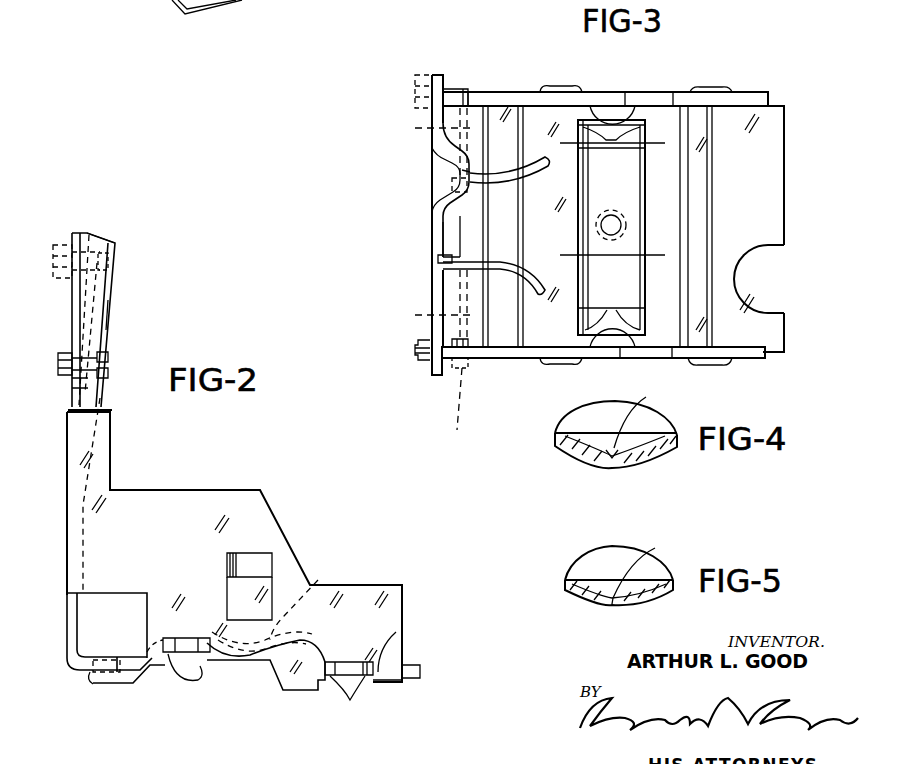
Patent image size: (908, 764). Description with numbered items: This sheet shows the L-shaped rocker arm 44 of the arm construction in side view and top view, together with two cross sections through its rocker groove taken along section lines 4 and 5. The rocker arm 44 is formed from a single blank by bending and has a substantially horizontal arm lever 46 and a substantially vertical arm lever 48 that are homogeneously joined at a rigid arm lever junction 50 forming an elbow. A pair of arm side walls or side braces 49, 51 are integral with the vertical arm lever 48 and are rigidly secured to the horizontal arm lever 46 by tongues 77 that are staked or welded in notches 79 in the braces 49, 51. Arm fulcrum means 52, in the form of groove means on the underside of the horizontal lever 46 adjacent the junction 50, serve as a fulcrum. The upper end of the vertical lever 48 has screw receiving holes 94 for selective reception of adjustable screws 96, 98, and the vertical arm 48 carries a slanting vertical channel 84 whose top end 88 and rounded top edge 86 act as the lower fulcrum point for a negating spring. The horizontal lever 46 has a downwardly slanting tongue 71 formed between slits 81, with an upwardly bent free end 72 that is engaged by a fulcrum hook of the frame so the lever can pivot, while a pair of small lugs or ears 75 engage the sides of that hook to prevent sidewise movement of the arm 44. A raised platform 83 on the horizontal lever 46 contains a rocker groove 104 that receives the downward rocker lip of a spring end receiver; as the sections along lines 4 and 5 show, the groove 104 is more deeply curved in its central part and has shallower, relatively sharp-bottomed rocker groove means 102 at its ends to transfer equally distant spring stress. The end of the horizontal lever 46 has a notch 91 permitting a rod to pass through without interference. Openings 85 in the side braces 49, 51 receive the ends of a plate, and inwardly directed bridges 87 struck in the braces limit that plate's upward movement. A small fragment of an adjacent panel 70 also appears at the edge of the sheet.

In FIG. 3, the L-shaped rocker arm 44 is at (786, 50).
In FIG. 2, the L-shaped rocker arm 44 is at (305, 462).
In FIG. 3, the horizontal arm lever 46 is at (497, 406).
In FIG. 2, the horizontal arm lever 46 is at (200, 702).
In FIG. 3, the vertical arm lever 48 is at (388, 253).
In FIG. 2, the vertical arm lever 48 is at (148, 300).
In FIG. 3, the arm side wall 49 is at (512, 360).
In FIG. 2, the arm side wall 49 is at (168, 500).
In FIG. 2, the arm lever junction 50 is at (68, 672).
In FIG. 3, the arm side wall 51 is at (597, 91).
In FIG. 3, the arm fulcrum means 52 is at (429, 219).
In FIG. 2, the arm fulcrum means 52 is at (97, 684).
In FIG. 2, the panel 70 is at (234, 10).
In FIG. 3, the downwardly slanting tongue 71 is at (510, 230).
In FIG. 2, the downwardly slanting tongue 71 is at (142, 681).
In FIG. 3, the upwardly bent free end 72 is at (441, 228).
In FIG. 2, the upwardly bent free end 72 is at (90, 676).
In FIG. 3, the lugs or ears 75 is at (448, 170).
In FIG. 2, the lugs or ears 75 is at (84, 656).
In FIG. 3, the tongues 77 is at (552, 87).
In FIG. 2, the tongues 77 is at (185, 638).
In FIG. 2, the notches 79 is at (398, 640).
In FIG. 3, the slits 81 is at (530, 140).
In FIG. 3, the raised platform 83 is at (514, 350).
In FIG. 2, the raised platform 83 is at (161, 638).
In FIG. 4, the raised platform 83 is at (558, 447).
In FIG. 5, the raised platform 83 is at (567, 580).
In FIG. 3, the slanting vertical channel 84 is at (445, 198).
In FIG. 2, the slanting vertical channel 84 is at (108, 316).
In FIG. 2, the openings 85 is at (258, 592).
In FIG. 2, the top edge 86 is at (113, 242).
In FIG. 2, the inwardly directed bridges 87 is at (252, 562).
In FIG. 3, the top end 88 is at (468, 174).
In FIG. 2, the top end 88 is at (110, 258).
In FIG. 3, the notch 91 is at (770, 252).
In FIG. 3, the screw receiving holes 94 is at (446, 78).
In FIG. 2, the screw receiving holes 94 is at (82, 236).
In FIG. 3, the screw 96 is at (449, 281).
In FIG. 2, the screw 96 is at (108, 386).
In FIG. 3, the screw 98 is at (412, 75).
In FIG. 2, the screw 98 is at (60, 244).
In FIG. 3, the rocker groove means 102 is at (614, 136).
In FIG. 2, the rocker groove means 102 is at (250, 658).
In FIG. 4, the rocker groove means 102 is at (651, 414).
In FIG. 5, the rocker groove means 102 is at (657, 564).
In FIG. 3, the rocker groove 104 is at (598, 188).
In FIG. 2, the rocker groove 104 is at (313, 597).
In FIG. 4, the rocker groove 104 is at (636, 462).
In FIG. 3, the section line 4- 4 is at (562, 258).
In FIG. 3, the section line 5- 5 is at (563, 146).